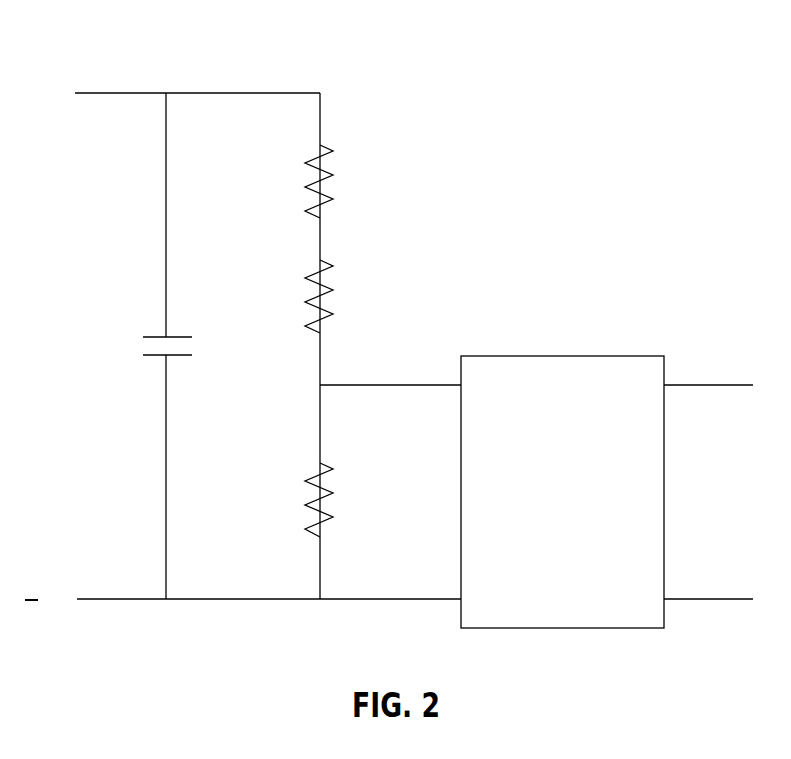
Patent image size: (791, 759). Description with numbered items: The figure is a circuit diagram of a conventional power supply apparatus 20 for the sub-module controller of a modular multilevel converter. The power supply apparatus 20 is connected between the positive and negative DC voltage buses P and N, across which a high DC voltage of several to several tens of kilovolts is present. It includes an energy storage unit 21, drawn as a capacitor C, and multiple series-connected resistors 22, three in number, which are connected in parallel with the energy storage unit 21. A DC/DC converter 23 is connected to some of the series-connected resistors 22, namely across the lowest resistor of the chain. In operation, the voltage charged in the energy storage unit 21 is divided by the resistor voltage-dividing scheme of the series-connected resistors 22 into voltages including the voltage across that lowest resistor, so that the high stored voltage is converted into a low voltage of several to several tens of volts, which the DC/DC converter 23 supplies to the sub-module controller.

The power supply apparatus 20 is at (408, 123).
The energy storage unit 21 is at (151, 335).
The series-connected resistors 22 is at (308, 476).
The DC/DC converter 23 is at (573, 355).